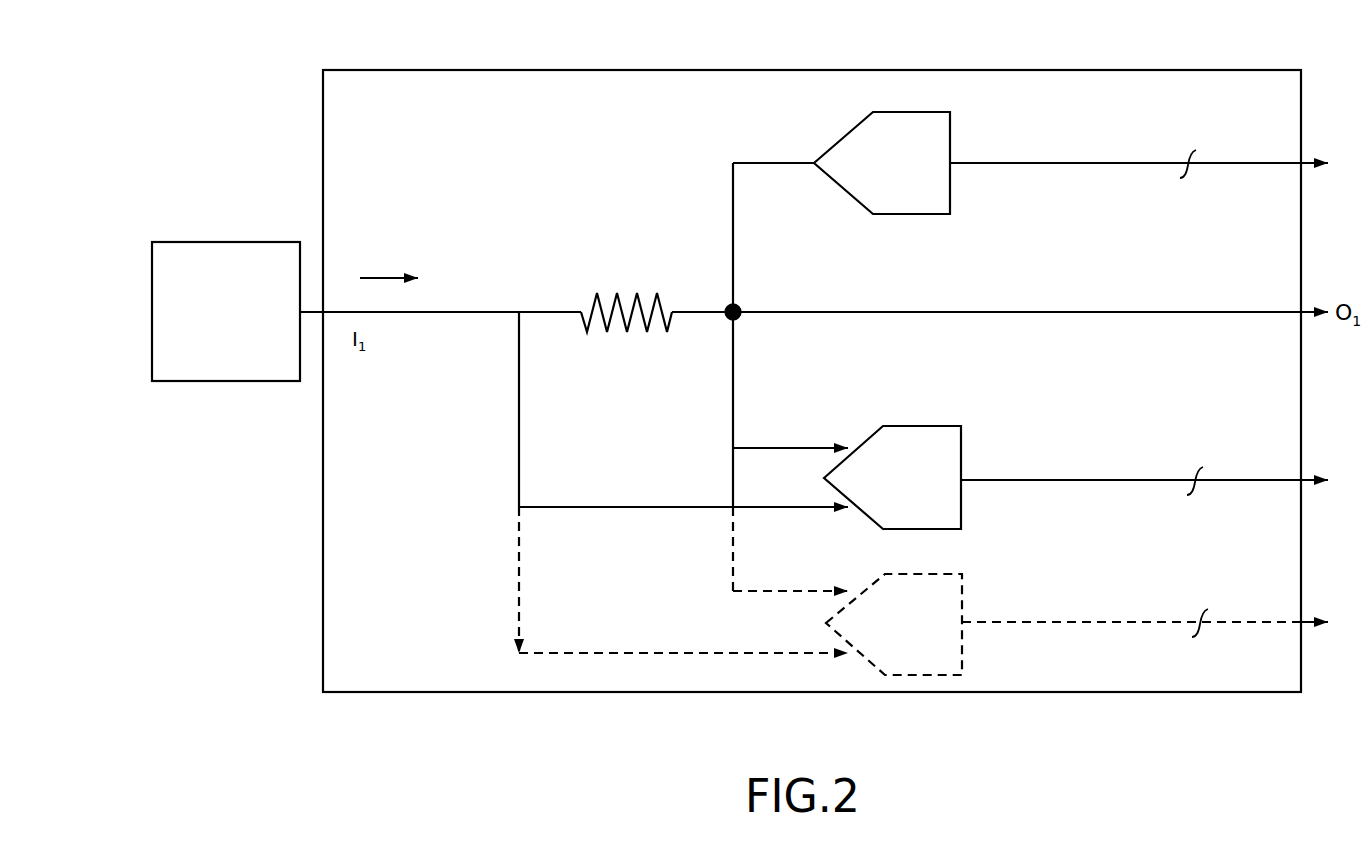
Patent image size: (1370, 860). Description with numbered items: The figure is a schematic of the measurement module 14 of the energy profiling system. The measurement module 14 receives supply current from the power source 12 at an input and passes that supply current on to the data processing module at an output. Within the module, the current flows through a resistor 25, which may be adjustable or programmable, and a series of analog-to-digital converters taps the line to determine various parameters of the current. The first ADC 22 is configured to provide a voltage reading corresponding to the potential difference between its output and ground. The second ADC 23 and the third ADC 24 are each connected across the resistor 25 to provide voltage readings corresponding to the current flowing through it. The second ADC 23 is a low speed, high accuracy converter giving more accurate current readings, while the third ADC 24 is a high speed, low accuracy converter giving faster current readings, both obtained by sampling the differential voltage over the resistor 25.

The power source 12 is at (226, 311).
The measurement module 14 is at (1068, 88).
The first ADC 22 is at (1047, 163).
The second ADC 23 is at (940, 477).
The third ADC 24 is at (940, 624).
The resistor 25 is at (617, 295).